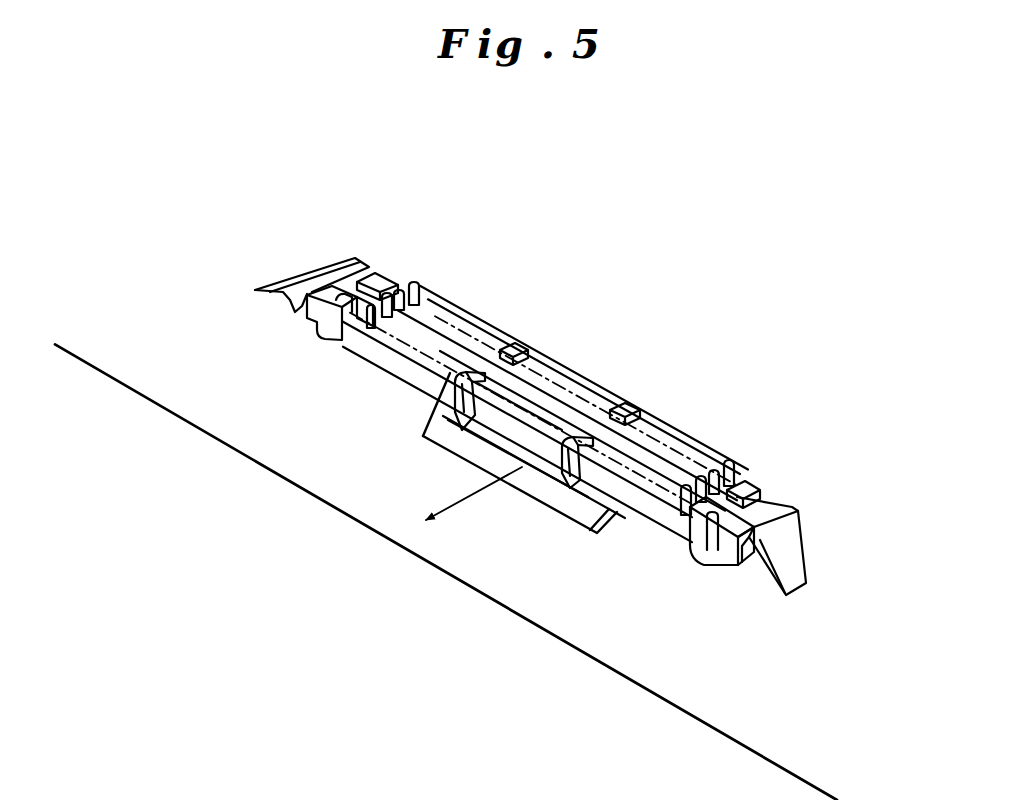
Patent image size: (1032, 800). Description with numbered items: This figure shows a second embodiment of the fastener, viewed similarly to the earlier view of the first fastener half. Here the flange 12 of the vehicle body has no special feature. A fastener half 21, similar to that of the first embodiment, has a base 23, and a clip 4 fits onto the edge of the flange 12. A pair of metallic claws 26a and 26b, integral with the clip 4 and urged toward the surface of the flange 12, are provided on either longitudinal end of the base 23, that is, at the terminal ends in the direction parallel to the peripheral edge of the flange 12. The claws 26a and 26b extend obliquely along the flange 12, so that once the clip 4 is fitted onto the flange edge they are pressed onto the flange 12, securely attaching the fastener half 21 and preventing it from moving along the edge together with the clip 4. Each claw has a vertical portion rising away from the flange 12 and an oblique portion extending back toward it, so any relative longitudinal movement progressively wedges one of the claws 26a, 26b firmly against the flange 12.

The clip 4 is at (589, 546).
The flange 12 is at (703, 719).
The fastener half 21 is at (599, 342).
The base 23 is at (655, 517).
The metallic claw 26a is at (308, 270).
The metallic claw 26b is at (797, 537).